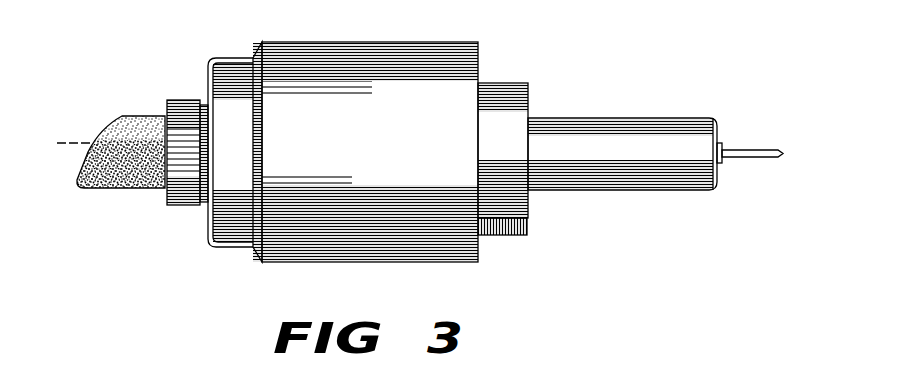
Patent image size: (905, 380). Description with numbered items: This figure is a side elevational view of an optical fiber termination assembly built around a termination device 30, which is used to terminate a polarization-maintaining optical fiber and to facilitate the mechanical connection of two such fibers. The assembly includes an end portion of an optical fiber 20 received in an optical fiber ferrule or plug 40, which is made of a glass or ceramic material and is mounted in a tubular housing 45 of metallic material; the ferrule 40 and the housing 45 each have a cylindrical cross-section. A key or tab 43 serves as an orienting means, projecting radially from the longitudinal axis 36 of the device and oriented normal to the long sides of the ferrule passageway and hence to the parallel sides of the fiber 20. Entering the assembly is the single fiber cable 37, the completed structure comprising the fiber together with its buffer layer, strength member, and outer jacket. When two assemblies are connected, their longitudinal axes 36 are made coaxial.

The termination device 30 is at (565, 76).
The tubular housing 45 is at (353, 43).
The key or tab 43 is at (528, 228).
The optical fiber ferrule or plug 40 is at (618, 117).
The optical fiber 20 is at (751, 160).
The single fiber cable 37 is at (128, 110).
The longitudinal axis 36 is at (76, 141).